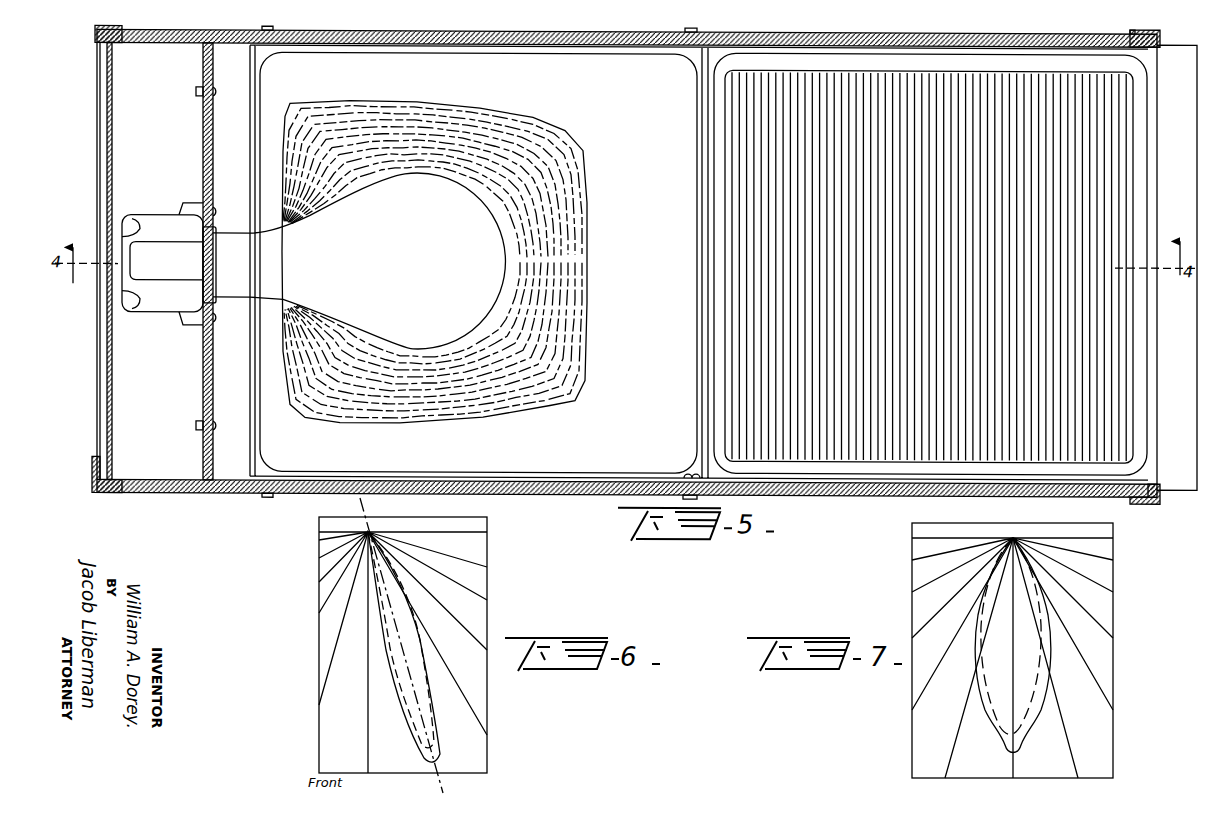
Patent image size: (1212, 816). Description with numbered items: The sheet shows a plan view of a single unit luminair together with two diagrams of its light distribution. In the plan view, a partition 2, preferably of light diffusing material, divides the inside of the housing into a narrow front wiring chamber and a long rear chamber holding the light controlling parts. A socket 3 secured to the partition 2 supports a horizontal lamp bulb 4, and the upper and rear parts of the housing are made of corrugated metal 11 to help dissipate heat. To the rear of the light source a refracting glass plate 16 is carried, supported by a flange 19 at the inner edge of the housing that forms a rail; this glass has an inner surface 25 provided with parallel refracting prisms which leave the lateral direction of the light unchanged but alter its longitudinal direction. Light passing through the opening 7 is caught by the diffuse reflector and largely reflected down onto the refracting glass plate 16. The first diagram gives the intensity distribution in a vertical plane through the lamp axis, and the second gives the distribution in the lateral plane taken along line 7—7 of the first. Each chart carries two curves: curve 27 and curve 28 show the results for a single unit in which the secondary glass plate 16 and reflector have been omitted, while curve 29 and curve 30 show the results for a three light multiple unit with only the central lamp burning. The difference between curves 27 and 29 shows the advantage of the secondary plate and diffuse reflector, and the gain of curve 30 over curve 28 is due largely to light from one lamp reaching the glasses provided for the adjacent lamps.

In FIG. 5, the partition 2 is at (203, 128).
In FIG. 5, the socket 3 is at (159, 214).
In FIG. 5, the lamp bulb 4 is at (395, 262).
In FIG. 5, the corrugated metal 11 is at (107, 314).
In FIG. 5, the refracting glass plate 16 is at (929, 266).
In FIG. 5, the flange 19 is at (1197, 486).
In FIG. 5, the inner surface with parallel refracting prisms 25 is at (940, 165).
In FIG. 6, the opening 7 is at (369, 514).
In FIG. 6, the distribution curve 27 is at (417, 596).
In FIG. 6, the distribution curve 29 is at (411, 568).
In FIG. 7, the distribution curve 28 is at (1045, 639).
In FIG. 7, the distribution curve 30 is at (1042, 573).